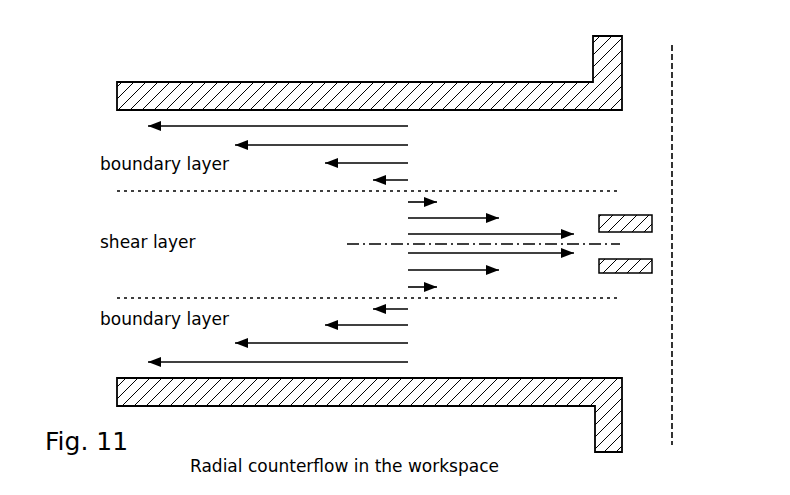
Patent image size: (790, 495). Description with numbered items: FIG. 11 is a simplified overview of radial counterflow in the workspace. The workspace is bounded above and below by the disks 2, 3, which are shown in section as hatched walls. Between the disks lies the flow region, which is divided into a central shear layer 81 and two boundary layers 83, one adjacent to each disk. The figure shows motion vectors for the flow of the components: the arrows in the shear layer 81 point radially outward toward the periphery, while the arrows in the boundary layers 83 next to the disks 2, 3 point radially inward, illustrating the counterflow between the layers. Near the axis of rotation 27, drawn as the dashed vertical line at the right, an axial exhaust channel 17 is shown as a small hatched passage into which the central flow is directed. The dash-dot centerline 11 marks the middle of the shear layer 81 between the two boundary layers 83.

The disk 2 is at (383, 92).
The disk 3 is at (395, 398).
The central axis / inlet jet 11 is at (392, 237).
The axial exhaust channel 17 is at (625, 242).
The axis of rotation 27 is at (671, 261).
The shear layer 81 is at (275, 263).
The boundary layers 83 is at (520, 145).